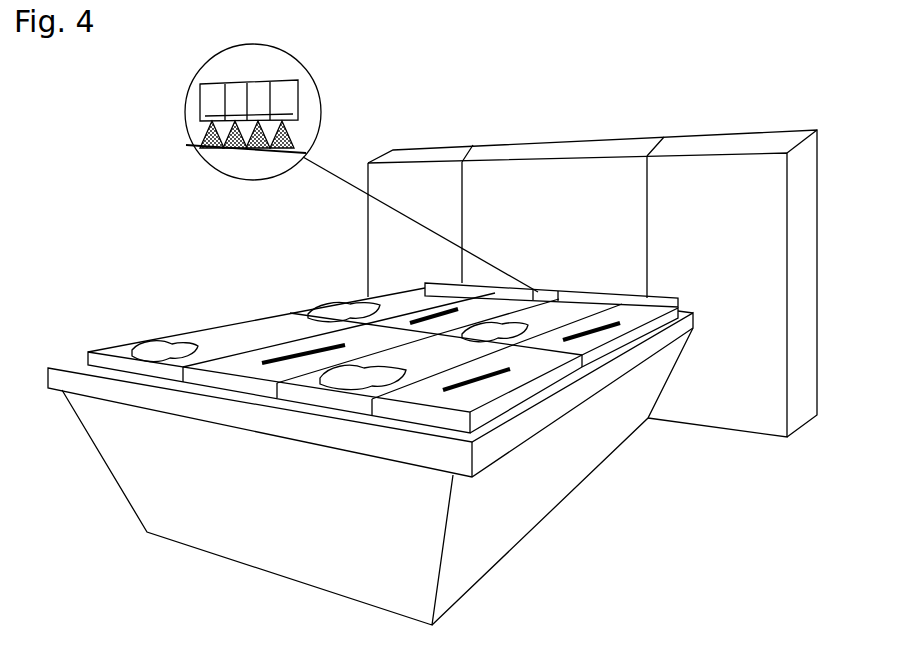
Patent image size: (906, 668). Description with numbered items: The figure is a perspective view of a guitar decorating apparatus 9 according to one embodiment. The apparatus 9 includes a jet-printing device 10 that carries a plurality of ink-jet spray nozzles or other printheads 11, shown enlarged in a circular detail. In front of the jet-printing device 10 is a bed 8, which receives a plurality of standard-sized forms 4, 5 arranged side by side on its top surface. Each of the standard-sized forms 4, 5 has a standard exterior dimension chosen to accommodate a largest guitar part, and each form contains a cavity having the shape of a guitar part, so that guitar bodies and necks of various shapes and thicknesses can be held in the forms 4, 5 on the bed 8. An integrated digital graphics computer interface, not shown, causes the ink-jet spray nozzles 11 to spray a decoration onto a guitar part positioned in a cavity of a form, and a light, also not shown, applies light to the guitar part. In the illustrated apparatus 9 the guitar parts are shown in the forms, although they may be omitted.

The standard-sized form 4 is at (240, 333).
The standard-sized form 5 is at (335, 350).
The bed 8 is at (558, 408).
The guitar decorating apparatus 9 is at (104, 162).
The jet-printing device 10 is at (651, 138).
The ink-jet spray nozzles 11 is at (303, 70).